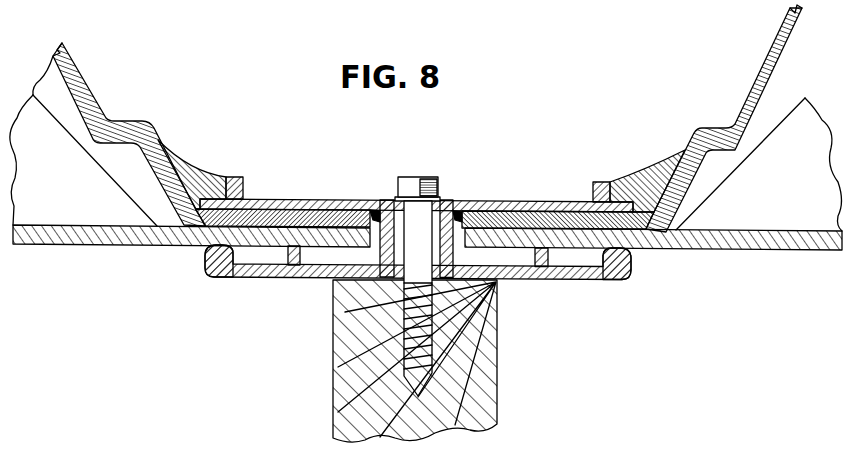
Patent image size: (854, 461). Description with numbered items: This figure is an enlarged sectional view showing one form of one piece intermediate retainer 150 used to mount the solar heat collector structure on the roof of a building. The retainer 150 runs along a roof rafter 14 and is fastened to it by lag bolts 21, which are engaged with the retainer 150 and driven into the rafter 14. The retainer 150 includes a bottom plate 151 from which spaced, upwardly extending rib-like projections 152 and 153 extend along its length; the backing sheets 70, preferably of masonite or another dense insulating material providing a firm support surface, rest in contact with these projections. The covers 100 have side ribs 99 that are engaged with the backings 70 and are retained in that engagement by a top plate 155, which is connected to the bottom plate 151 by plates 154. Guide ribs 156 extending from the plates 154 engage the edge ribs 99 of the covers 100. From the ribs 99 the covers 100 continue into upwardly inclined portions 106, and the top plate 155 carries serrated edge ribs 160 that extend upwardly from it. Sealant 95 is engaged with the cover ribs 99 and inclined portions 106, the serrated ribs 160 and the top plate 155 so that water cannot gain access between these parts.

The roof rafter 14 is at (500, 373).
The lag bolt 21 is at (413, 178).
The backing sheet 70 is at (143, 246).
The sealant 95 is at (185, 180).
The side rib 99 is at (281, 200).
The cover 100 is at (148, 72).
The inclined portion 106 is at (153, 136).
The intermediate retainer 150 is at (436, 141).
The bottom plate 151 is at (587, 281).
The rib-like projection 152 is at (290, 258).
The rib-like projection 153 is at (204, 263).
The connecting plate 154 is at (381, 246).
The top plate 155 is at (510, 200).
The guide rib 156 is at (377, 213).
The serrated edge rib 160 is at (235, 177).